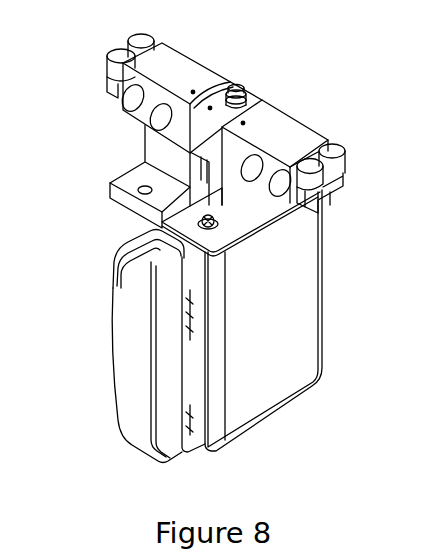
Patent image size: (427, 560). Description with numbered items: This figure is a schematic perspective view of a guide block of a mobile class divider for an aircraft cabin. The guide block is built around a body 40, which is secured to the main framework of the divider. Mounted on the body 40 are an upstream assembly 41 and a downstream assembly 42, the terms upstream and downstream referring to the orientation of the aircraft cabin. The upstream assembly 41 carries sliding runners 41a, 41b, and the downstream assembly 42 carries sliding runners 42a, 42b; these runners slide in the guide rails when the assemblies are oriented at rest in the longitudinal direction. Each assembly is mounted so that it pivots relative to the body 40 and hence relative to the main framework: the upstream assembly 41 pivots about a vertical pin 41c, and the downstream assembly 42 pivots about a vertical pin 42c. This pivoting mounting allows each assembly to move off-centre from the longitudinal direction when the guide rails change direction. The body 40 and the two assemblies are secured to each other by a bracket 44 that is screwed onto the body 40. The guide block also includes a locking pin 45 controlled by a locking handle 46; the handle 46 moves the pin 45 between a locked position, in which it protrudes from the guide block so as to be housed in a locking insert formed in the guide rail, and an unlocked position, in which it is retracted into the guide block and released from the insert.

The body 40 is at (297, 333).
The upstream assembly 41 is at (150, 63).
The sliding runner 41a is at (125, 97).
The sliding runner 41b is at (148, 127).
The vertical pin 41c is at (194, 91).
The downstream assembly 42 is at (293, 129).
The sliding runner 42a is at (253, 182).
The sliding runner 42b is at (283, 192).
The vertical pin 42c is at (245, 122).
The bracket 44 is at (115, 175).
The locking pin 45 is at (241, 86).
The locking handle 46 is at (115, 374).